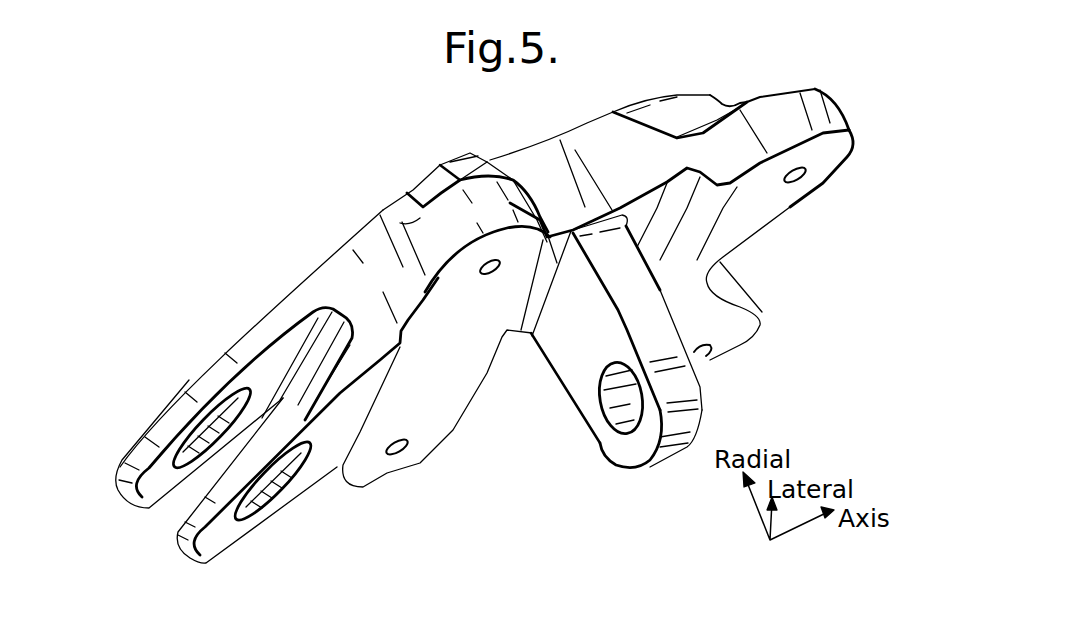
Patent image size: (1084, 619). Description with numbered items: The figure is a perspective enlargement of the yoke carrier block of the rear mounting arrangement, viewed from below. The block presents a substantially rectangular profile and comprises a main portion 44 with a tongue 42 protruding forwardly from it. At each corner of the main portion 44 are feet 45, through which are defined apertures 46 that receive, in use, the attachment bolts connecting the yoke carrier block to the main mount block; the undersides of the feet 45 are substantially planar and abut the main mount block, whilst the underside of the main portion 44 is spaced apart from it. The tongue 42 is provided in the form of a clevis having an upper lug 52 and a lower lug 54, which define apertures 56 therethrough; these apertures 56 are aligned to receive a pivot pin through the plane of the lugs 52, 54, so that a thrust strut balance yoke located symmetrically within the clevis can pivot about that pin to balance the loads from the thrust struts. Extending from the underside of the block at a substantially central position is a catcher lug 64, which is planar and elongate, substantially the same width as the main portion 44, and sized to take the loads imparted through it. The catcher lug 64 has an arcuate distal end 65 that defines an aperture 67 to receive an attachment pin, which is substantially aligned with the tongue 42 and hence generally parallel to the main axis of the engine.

The tongue 42 is at (305, 276).
The main portion 44 is at (532, 141).
The feet 45 is at (503, 220).
The apertures 46 is at (492, 272).
The upper lug 52 is at (160, 428).
The lower lug 54 is at (270, 508).
The apertures 56 is at (280, 463).
The catcher lug 64 is at (603, 340).
The arcuate distal end 65 is at (677, 435).
The aperture 67 is at (621, 408).